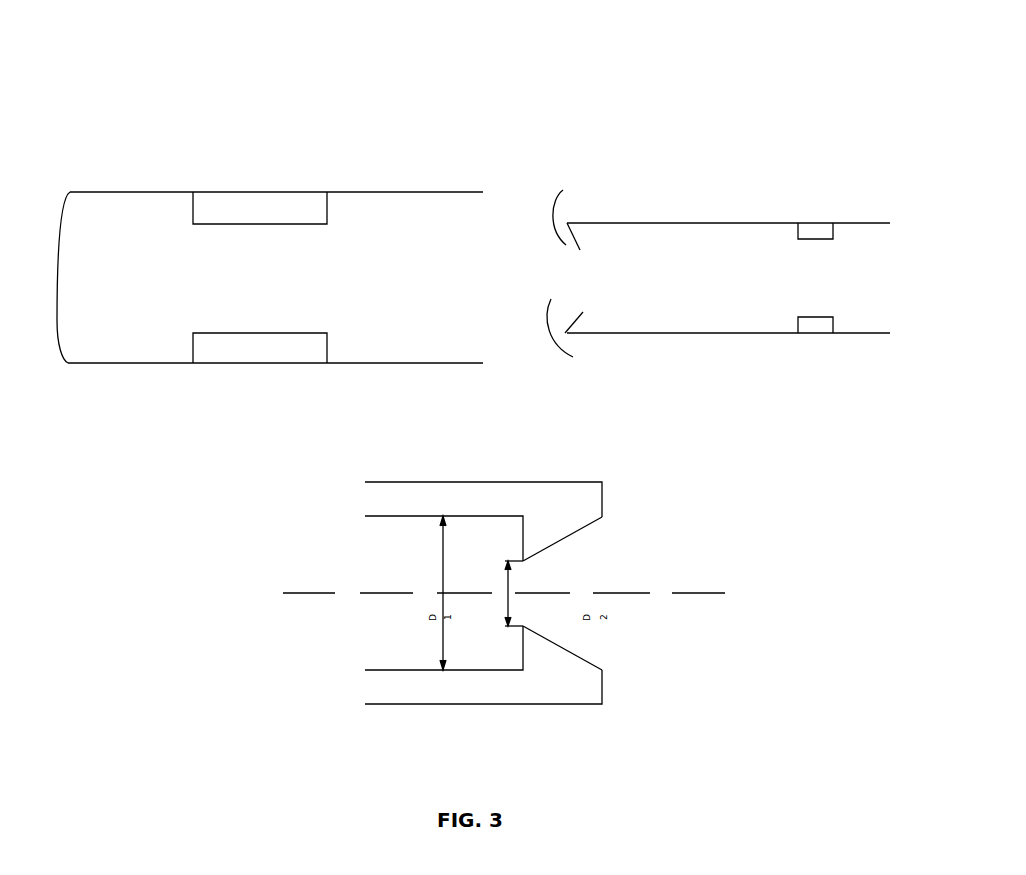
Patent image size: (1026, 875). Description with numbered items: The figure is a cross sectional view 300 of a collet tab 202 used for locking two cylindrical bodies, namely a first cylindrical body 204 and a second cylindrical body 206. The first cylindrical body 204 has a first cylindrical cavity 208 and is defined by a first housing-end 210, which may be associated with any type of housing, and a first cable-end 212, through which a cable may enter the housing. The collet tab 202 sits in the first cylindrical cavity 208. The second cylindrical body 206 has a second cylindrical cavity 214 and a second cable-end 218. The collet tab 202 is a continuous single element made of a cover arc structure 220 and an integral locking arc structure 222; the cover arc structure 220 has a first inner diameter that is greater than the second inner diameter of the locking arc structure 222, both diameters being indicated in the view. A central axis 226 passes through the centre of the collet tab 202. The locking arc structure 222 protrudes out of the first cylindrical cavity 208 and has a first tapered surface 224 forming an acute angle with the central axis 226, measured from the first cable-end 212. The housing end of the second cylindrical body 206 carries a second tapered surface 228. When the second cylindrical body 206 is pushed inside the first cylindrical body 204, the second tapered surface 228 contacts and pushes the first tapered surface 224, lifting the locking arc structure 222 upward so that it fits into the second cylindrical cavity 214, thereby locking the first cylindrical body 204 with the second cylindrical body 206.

The cross sectional view 300 is at (119, 25).
The collet tab 202 is at (565, 483).
The first cylindrical body 204 is at (94, 320).
The second cylindrical body 206 is at (738, 307).
The first cylindrical cavity 208 is at (255, 208).
The first housing-end 210 is at (50, 335).
The first cable-end 212 is at (482, 302).
The second cylindrical cavity 214 is at (808, 228).
The second cable-end 218 is at (563, 283).
The cover arc structure 220 is at (385, 500).
The locking arc structure 222 is at (547, 538).
The first tapered surface 224 is at (543, 530).
The central axis 226 is at (305, 593).
The second tapered surface 228 is at (586, 290).